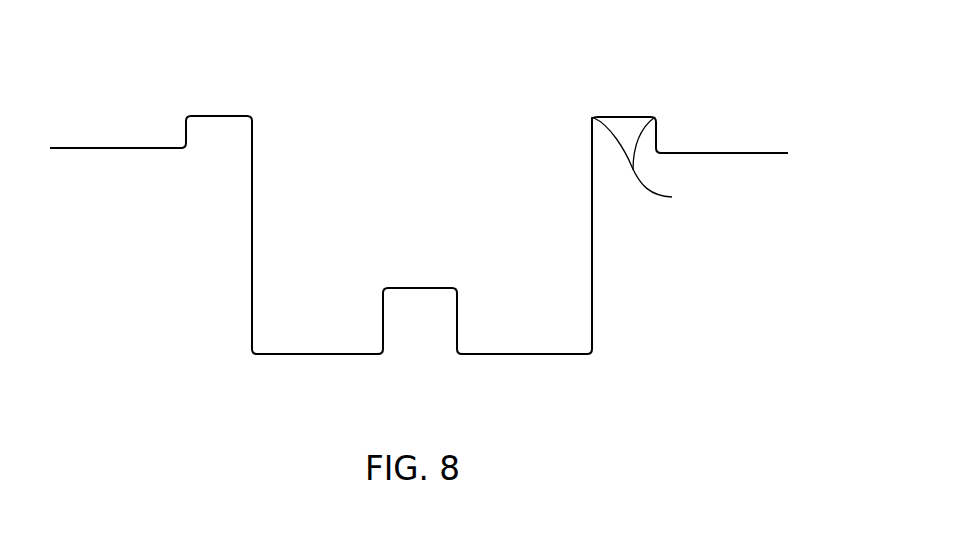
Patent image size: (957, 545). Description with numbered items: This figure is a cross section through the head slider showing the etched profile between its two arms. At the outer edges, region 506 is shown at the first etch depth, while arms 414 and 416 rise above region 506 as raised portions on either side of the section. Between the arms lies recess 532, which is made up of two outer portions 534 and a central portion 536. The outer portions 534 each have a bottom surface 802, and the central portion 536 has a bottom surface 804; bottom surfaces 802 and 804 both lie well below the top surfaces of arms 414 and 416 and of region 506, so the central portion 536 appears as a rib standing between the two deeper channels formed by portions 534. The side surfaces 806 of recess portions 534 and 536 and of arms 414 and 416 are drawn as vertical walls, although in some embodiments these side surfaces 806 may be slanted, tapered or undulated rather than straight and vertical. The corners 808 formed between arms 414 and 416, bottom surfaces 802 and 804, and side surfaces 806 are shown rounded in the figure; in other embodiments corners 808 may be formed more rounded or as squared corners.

The arm 416 is at (217, 115).
The arm 414 is at (623, 116).
The region 506 is at (112, 148).
The recess 532 is at (437, 95).
The portion of recess 534 is at (328, 240).
The portion of recess 536 is at (426, 211).
The bottom surface 802 is at (293, 354).
The bottom surface 804 is at (420, 288).
The side surface 806 is at (185, 131).
The corner 808 is at (250, 117).